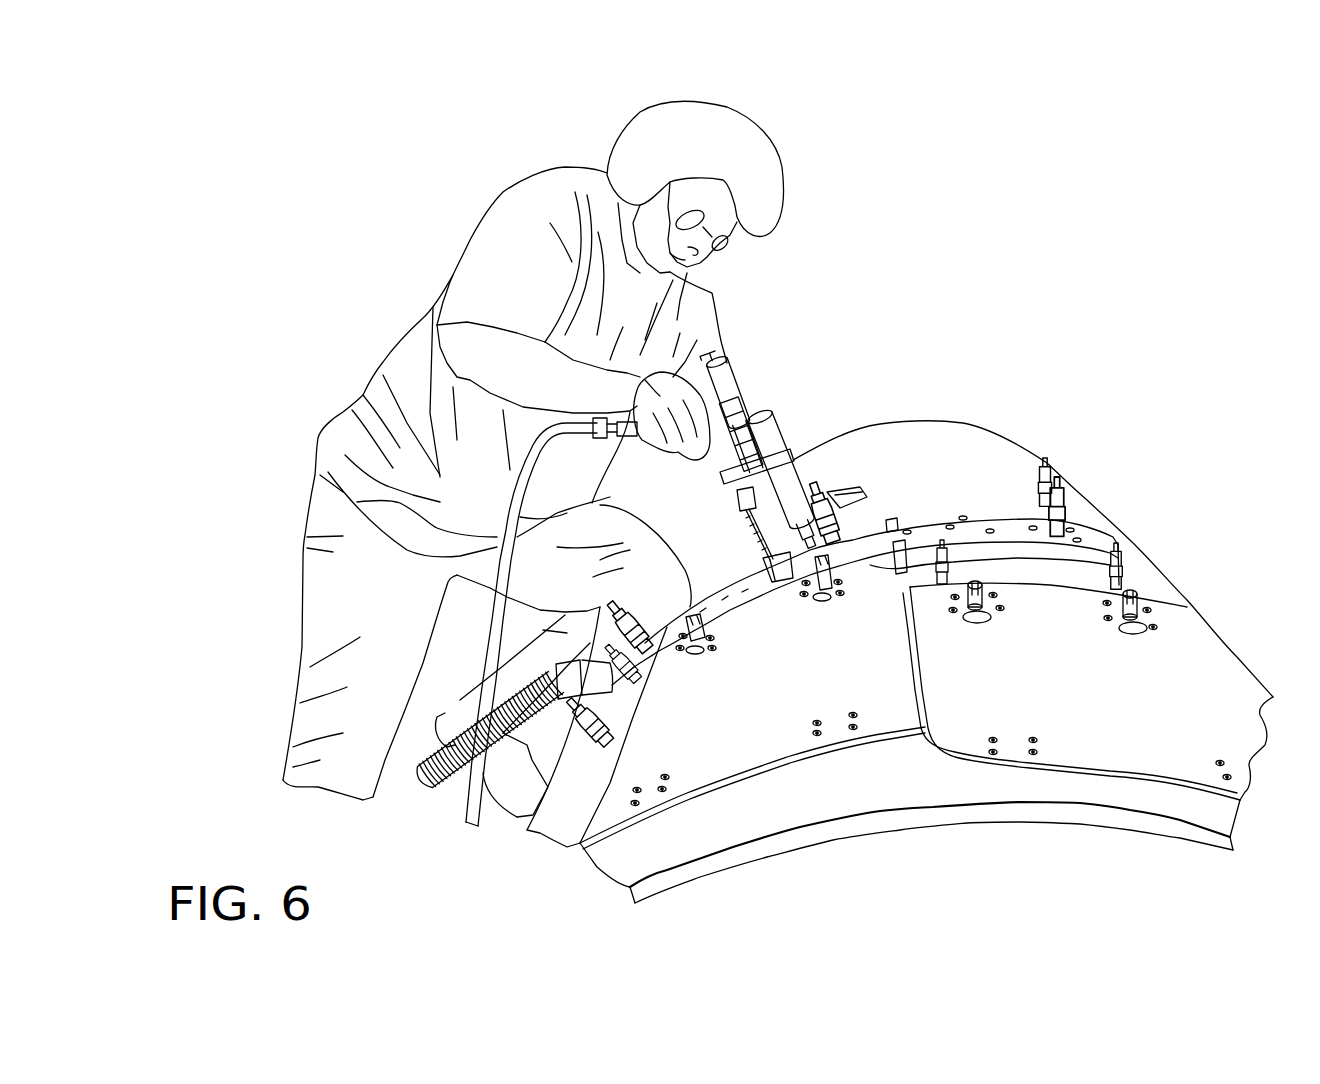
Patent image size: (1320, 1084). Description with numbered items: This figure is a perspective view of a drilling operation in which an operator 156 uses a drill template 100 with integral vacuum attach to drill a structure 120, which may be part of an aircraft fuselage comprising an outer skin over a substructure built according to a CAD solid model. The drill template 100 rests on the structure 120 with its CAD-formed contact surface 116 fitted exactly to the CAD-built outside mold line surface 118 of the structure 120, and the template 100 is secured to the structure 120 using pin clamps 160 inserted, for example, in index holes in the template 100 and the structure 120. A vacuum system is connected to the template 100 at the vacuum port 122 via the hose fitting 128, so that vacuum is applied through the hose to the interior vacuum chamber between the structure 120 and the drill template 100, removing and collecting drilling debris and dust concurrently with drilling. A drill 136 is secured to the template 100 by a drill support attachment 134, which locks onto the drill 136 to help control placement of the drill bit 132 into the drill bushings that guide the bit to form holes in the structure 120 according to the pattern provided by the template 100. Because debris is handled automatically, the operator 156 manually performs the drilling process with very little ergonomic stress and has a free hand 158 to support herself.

The operator 156 is at (703, 298).
The drill 136 is at (757, 424).
The structure 120 is at (950, 430).
The free hand 158 is at (830, 484).
The outside mold line surface 118 is at (962, 502).
The pin clamps 160 is at (1067, 487).
The drill template 100 is at (1103, 533).
The drill bit 132 is at (747, 540).
The contact surface 116 is at (1020, 558).
The drill support attachment 134 is at (782, 580).
The vacuum port 122 is at (614, 668).
The hose fitting 128 is at (590, 680).